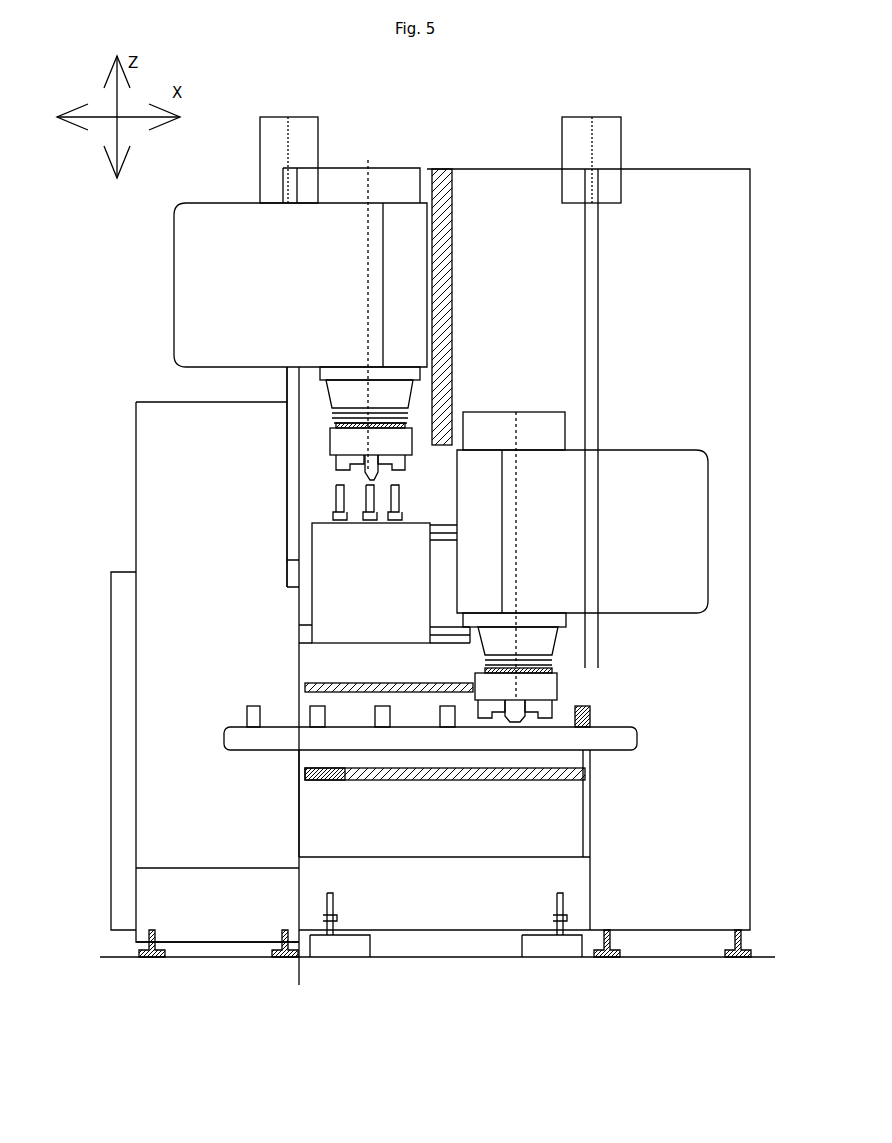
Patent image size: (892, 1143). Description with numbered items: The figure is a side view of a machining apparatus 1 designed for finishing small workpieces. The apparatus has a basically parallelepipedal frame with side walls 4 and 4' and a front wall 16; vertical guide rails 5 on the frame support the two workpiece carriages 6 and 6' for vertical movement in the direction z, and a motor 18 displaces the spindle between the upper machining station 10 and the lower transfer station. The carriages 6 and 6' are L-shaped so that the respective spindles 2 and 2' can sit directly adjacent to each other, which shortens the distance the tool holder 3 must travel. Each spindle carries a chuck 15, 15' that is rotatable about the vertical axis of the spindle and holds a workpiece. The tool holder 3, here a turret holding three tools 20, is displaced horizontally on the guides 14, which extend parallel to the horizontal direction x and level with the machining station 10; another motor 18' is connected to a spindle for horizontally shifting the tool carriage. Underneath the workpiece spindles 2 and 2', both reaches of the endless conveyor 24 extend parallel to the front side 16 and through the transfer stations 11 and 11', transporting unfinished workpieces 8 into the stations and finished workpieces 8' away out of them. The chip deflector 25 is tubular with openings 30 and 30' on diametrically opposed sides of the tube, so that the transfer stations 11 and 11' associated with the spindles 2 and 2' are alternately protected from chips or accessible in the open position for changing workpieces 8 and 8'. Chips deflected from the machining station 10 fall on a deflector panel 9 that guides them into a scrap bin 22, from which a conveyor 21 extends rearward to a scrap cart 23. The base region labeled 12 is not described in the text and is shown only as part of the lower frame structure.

The machining apparatus 1 is at (408, 145).
The spindle 2 is at (370, 366).
The spindle 2' is at (565, 639).
The tool holder 3 is at (370, 572).
The side wall 4 is at (275, 803).
The side wall 4' is at (617, 840).
The vertical guide rail 5 is at (600, 241).
The workpiece carriage 6 is at (274, 315).
The workpiece carriage 6' is at (582, 540).
The unfinished workpiece 8 is at (401, 470).
The finished workpiece 8' is at (458, 711).
The deflector panel 9 is at (453, 282).
The machining station 10 is at (200, 493).
The transfer station 11 is at (330, 679).
The transfer station 11' is at (657, 683).
The machine base 12 is at (740, 862).
The guide rail 14 is at (460, 640).
The chuck 15 is at (331, 446).
The chuck 15' is at (557, 693).
The front wall 16 is at (497, 197).
The motor 18 is at (306, 145).
The motor 18' is at (582, 143).
The machining tool 20 is at (340, 487).
The conveyor 21 is at (180, 790).
The scrap bin 22 is at (160, 885).
The scrap cart 23 is at (125, 840).
The conveyor 24 is at (625, 743).
The chip deflector 25 is at (515, 781).
The opening 30 is at (347, 794).
The opening 30' is at (390, 672).